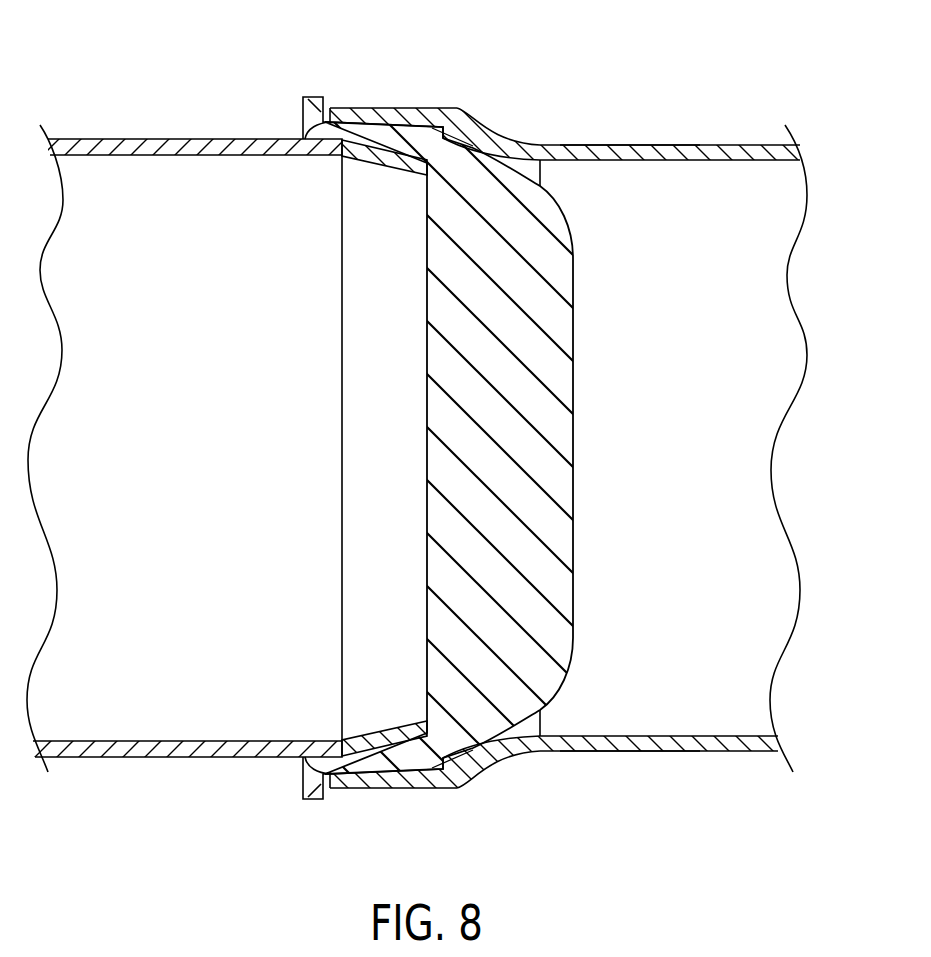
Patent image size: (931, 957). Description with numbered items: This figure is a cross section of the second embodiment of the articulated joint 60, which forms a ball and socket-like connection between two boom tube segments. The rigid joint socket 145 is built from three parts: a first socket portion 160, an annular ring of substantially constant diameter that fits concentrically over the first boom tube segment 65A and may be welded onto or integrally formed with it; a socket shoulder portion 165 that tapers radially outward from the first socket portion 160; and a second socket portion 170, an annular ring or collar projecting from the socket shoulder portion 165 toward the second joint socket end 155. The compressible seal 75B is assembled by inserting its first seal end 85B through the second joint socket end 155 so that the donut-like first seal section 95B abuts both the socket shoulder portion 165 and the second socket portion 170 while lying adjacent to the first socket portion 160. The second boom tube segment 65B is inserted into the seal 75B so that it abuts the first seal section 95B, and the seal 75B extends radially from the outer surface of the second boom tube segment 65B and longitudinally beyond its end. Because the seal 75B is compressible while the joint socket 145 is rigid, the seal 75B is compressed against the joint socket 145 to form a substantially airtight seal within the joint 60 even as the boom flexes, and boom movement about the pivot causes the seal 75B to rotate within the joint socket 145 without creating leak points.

The joint 60 is at (758, 32).
The first boom tube segment 65A is at (742, 145).
The second boom tube segment 65B is at (172, 139).
The seal 75B is at (568, 689).
The first seal end 85B is at (547, 190).
The first seal section 95B is at (573, 653).
The joint socket 145 is at (700, 141).
The second joint socket end 155 is at (337, 108).
The first socket portion 160 is at (656, 145).
The socket shoulder portion 165 is at (490, 125).
The second socket portion 170 is at (386, 108).